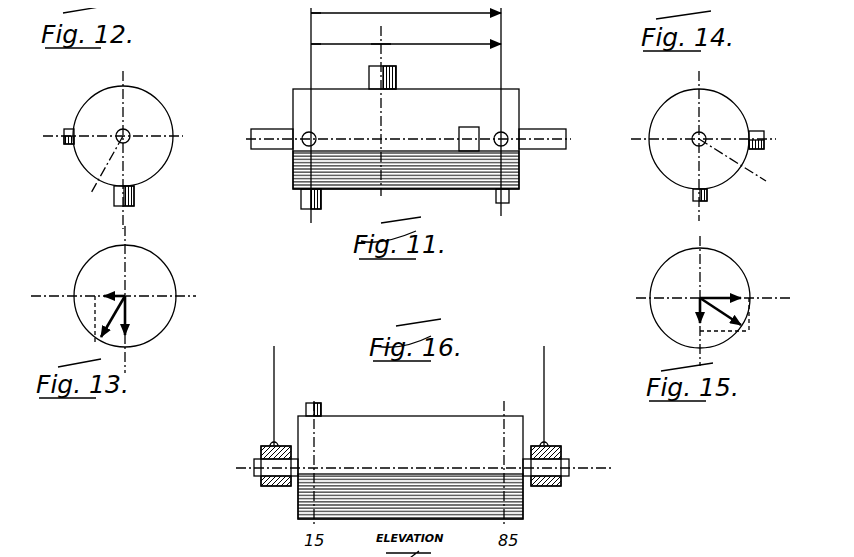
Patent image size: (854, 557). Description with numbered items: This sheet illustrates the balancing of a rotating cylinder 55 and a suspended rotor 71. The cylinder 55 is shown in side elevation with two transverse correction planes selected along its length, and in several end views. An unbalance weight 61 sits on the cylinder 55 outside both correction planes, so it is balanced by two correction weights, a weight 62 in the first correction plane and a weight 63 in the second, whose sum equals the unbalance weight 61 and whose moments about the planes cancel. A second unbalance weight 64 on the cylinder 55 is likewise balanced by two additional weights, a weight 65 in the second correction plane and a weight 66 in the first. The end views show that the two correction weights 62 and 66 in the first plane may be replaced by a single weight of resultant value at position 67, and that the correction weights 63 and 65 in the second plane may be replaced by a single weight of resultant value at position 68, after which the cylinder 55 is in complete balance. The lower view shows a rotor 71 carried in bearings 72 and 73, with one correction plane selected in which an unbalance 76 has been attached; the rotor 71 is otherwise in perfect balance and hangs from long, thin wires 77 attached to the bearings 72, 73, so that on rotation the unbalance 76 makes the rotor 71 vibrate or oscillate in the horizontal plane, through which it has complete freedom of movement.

In FIG. 12, the cylinder 55 is at (147, 115).
In FIG. 13, the cylinder 55 is at (147, 275).
In FIG. 11, the cylinder 55 is at (408, 141).
In FIG. 14, the cylinder 55 is at (668, 115).
In FIG. 15, the cylinder 55 is at (672, 272).
In FIG. 11, the unbalance weight 61 is at (395, 78).
In FIG. 12, the weight 62 is at (113, 192).
In FIG. 13, the weight 62 is at (124, 333).
In FIG. 11, the weight 62 is at (300, 198).
In FIG. 11, the weight 63 is at (510, 197).
In FIG. 14, the weight 63 is at (692, 195).
In FIG. 15, the weight 63 is at (698, 320).
In FIG. 11, the unbalance weight 64 is at (458, 136).
In FIG. 11, the weight 65 is at (508, 135).
In FIG. 14, the weight 65 is at (760, 130).
In FIG. 15, the weight 65 is at (745, 290).
In FIG. 12, the weight 66 is at (67, 128).
In FIG. 13, the weight 66 is at (105, 290).
In FIG. 11, the weight 66 is at (302, 132).
In FIG. 13, the position 67 is at (94, 343).
In FIG. 15, the position 68 is at (752, 331).
In FIG. 16, the rotor 71 is at (423, 463).
In FIG. 16, the bearing 72 is at (283, 485).
In FIG. 16, the bearing 73 is at (538, 488).
In FIG. 16, the unbalance 76 is at (322, 408).
In FIG. 16, the wires 77 is at (276, 358).